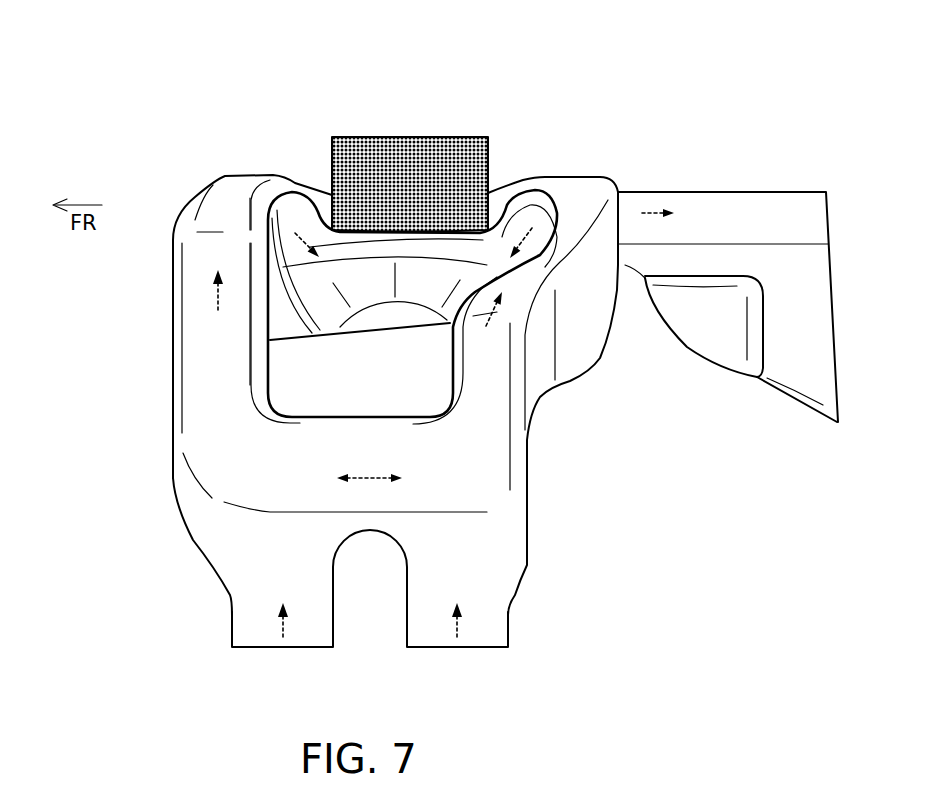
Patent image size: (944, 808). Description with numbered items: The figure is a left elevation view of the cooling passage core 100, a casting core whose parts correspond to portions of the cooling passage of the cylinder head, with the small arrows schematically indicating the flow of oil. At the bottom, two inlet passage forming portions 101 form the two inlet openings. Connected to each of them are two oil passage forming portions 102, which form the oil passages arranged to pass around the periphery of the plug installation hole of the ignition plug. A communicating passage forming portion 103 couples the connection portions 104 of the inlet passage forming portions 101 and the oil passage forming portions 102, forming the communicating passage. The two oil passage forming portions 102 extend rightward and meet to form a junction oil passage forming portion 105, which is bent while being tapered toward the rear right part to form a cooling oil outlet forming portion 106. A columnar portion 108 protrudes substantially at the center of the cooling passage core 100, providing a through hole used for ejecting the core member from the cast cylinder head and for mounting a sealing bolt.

The cooling passage core 100 is at (290, 103).
The inlet passage forming portions 101 is at (232, 633).
The oil passage forming portions 102 is at (173, 288).
The communicating passage forming portion 103 is at (368, 417).
The connection portions 104 is at (172, 480).
The junction oil passage forming portion 105 is at (650, 190).
The cooling oil outlet forming portion 106 is at (767, 190).
The columnar portion 108 is at (490, 145).